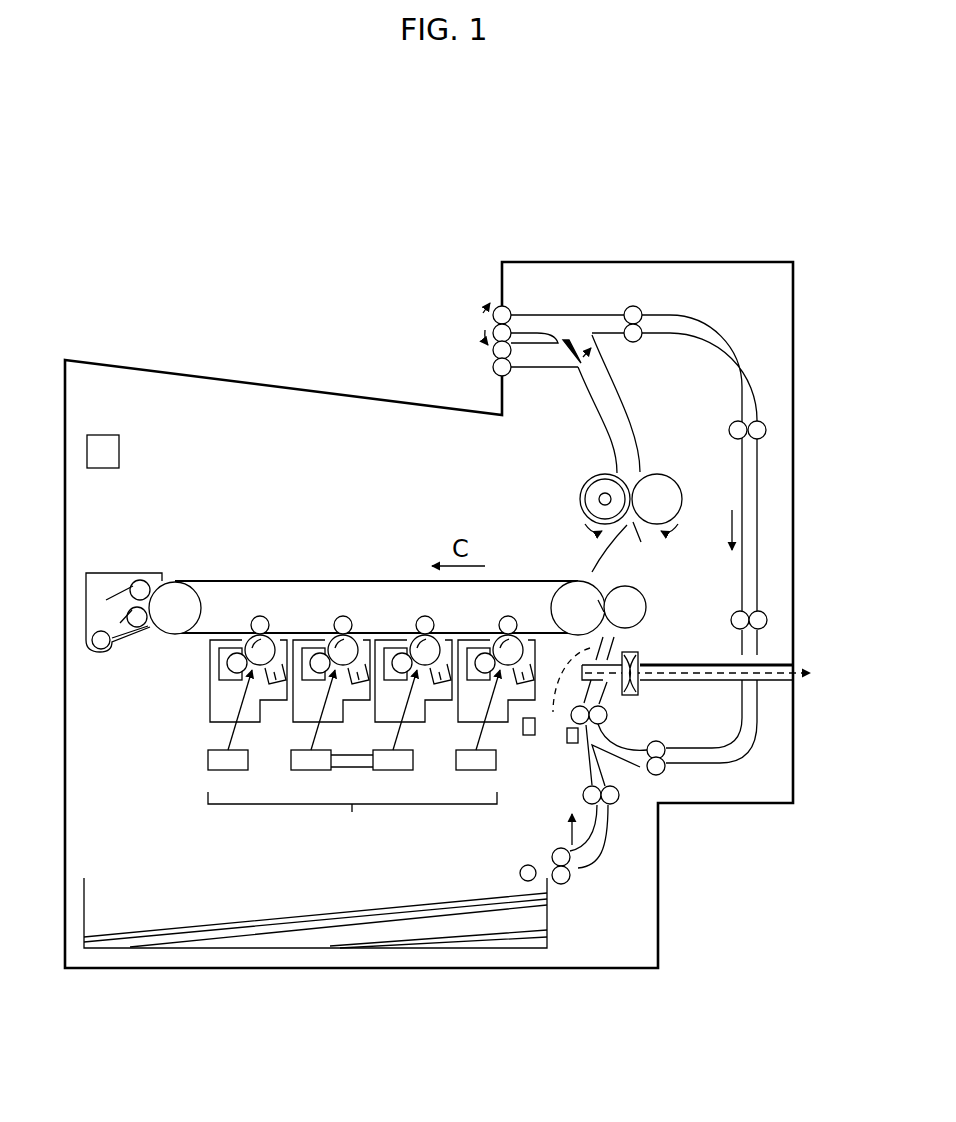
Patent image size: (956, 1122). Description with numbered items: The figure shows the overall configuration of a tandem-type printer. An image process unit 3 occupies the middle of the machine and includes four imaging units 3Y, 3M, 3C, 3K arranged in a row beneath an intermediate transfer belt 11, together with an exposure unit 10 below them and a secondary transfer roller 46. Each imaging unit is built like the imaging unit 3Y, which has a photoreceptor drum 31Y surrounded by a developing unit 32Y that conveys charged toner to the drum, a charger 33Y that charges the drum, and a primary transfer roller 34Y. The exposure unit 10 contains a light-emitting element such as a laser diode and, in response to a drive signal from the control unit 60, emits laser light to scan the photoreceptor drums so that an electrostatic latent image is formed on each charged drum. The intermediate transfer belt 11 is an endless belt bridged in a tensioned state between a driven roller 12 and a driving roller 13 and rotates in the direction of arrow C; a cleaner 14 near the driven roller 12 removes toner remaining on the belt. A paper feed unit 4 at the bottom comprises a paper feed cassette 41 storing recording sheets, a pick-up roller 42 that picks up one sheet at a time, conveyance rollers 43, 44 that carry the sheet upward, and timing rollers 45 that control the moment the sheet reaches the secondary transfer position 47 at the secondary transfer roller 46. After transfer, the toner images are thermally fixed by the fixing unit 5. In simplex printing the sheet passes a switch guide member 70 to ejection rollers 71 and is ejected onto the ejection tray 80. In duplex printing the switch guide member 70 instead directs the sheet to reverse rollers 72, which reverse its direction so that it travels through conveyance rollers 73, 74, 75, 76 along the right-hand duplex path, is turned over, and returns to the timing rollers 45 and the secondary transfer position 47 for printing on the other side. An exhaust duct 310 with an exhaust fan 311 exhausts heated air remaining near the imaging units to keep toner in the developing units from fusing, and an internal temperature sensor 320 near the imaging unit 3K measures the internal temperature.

The image process unit 3 is at (154, 660).
The imaging unit 3Y is at (232, 688).
The imaging unit 3M is at (315, 688).
The imaging unit 3C is at (397, 688).
The imaging unit 3K is at (480, 688).
The paper feed unit 4 is at (226, 884).
The fixing unit 5 is at (577, 477).
The exposure unit 10 is at (352, 817).
The intermediate transfer belt 11 is at (297, 580).
The driven roller 12 is at (175, 592).
The driving roller 13 is at (582, 582).
The cleaner 14 is at (120, 572).
The photoreceptor drum 31Y is at (250, 640).
The developing unit 32Y is at (215, 663).
The charger 33Y is at (272, 668).
The primary transfer roller 34Y is at (260, 616).
The paper feed cassette 41 is at (547, 922).
The pick-up roller 42 is at (520, 873).
The conveyance rollers 43 is at (552, 853).
The conveyance rollers 44 is at (612, 805).
The timing rollers 45 is at (603, 722).
The secondary transfer roller 46 is at (623, 602).
The secondary transfer position 47 is at (603, 608).
The control unit 60 is at (119, 436).
The switch guide member 70 is at (565, 341).
The ejection rollers 71 is at (492, 367).
The reverse rollers 72 is at (497, 306).
The conveyance rollers 73 is at (645, 310).
The conveyance rollers 74 is at (766, 426).
The conveyance rollers 75 is at (767, 619).
The conveyance rollers 76 is at (664, 770).
The ejection tray 80 is at (262, 383).
The exhaust duct 310 is at (645, 665).
The exhaust fan 311 is at (638, 655).
The internal temperature sensor 320 is at (529, 735).